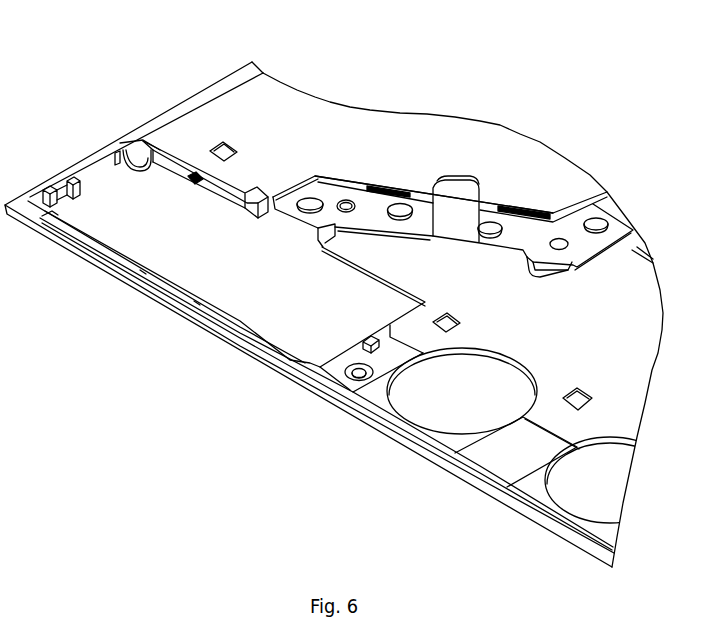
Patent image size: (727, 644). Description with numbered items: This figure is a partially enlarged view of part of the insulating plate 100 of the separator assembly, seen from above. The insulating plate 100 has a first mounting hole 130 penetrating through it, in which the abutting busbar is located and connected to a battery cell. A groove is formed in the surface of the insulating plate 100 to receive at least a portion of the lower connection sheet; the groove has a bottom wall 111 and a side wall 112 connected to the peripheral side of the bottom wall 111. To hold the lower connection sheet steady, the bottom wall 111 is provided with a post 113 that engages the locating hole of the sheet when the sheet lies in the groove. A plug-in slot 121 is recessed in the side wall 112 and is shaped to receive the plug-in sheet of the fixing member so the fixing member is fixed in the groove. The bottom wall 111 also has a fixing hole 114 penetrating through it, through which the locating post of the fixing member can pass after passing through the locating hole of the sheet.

The insulating plate 100 is at (240, 100).
The first mounting hole 130 is at (113, 165).
The bottom wall 111 is at (320, 170).
The side wall 112 is at (362, 158).
The post 113 is at (403, 208).
The fixing hole 114 is at (560, 243).
The plug-in slot 121 is at (375, 215).